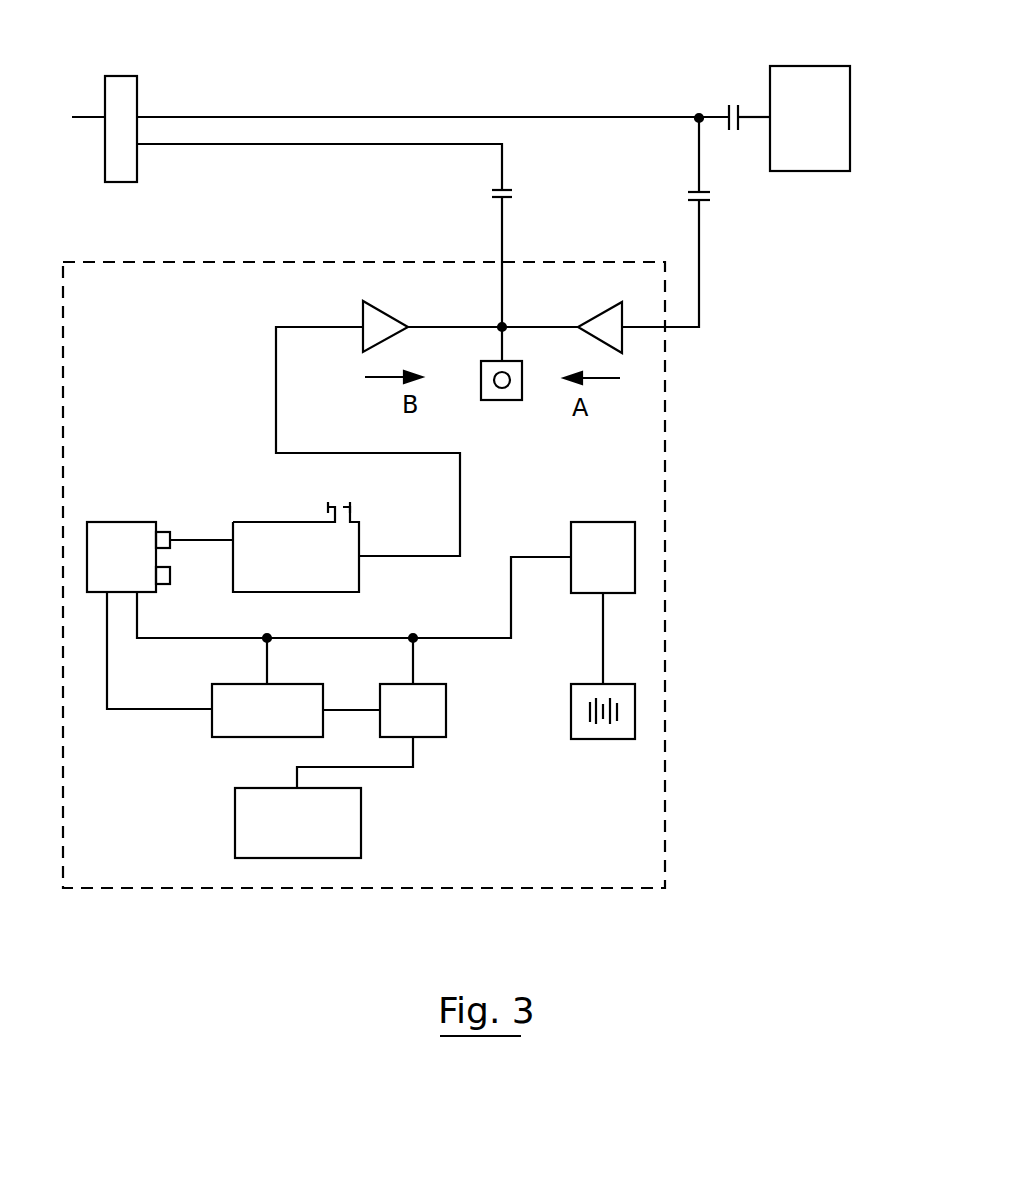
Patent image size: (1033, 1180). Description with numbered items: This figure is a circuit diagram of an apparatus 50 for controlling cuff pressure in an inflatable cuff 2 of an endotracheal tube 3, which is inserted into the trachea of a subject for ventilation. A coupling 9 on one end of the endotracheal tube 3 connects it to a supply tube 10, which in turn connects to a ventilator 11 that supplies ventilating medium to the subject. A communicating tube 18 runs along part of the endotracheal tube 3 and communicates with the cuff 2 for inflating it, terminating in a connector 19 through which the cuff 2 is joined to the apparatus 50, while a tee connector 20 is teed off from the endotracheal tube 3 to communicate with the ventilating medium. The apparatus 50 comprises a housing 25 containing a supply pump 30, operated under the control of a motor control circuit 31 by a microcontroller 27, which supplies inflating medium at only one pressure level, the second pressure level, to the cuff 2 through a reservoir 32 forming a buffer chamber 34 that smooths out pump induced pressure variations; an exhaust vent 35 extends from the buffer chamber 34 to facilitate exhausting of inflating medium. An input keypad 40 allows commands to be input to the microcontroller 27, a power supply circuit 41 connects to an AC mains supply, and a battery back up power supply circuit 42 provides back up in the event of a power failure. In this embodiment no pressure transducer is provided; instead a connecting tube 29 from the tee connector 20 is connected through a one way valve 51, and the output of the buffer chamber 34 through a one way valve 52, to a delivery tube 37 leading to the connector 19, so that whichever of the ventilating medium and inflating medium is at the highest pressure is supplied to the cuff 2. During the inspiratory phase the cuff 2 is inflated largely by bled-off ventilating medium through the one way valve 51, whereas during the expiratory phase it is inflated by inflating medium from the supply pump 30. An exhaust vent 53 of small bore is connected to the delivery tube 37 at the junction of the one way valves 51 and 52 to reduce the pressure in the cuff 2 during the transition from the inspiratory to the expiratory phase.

The inflatable cuff 2 is at (137, 97).
The endotracheal tube 3 is at (360, 112).
The coupling 9 is at (727, 112).
The supply tube 10 is at (752, 112).
The ventilator 11 is at (796, 66).
The communicating tube 18 is at (230, 148).
The connector 19 is at (505, 190).
The tee connector 20 is at (690, 190).
The housing 25 is at (668, 650).
The microcontroller 27 is at (447, 710).
The connecting tube 29 is at (700, 240).
The supply pump 30 is at (117, 522).
The motor control circuit 31 is at (304, 684).
The reservoir 32 is at (350, 582).
The buffer chamber 34 is at (291, 524).
The exhaust vent 35 is at (345, 500).
The delivery tube 37 is at (500, 240).
The input keypad 40 is at (362, 830).
The power supply circuit 41 is at (591, 524).
The battery back up power supply circuit 42 is at (580, 740).
The apparatus 50 is at (714, 448).
The one way valve 51 is at (600, 320).
The one way valve 52 is at (385, 312).
The exhaust vent 53 is at (505, 402).